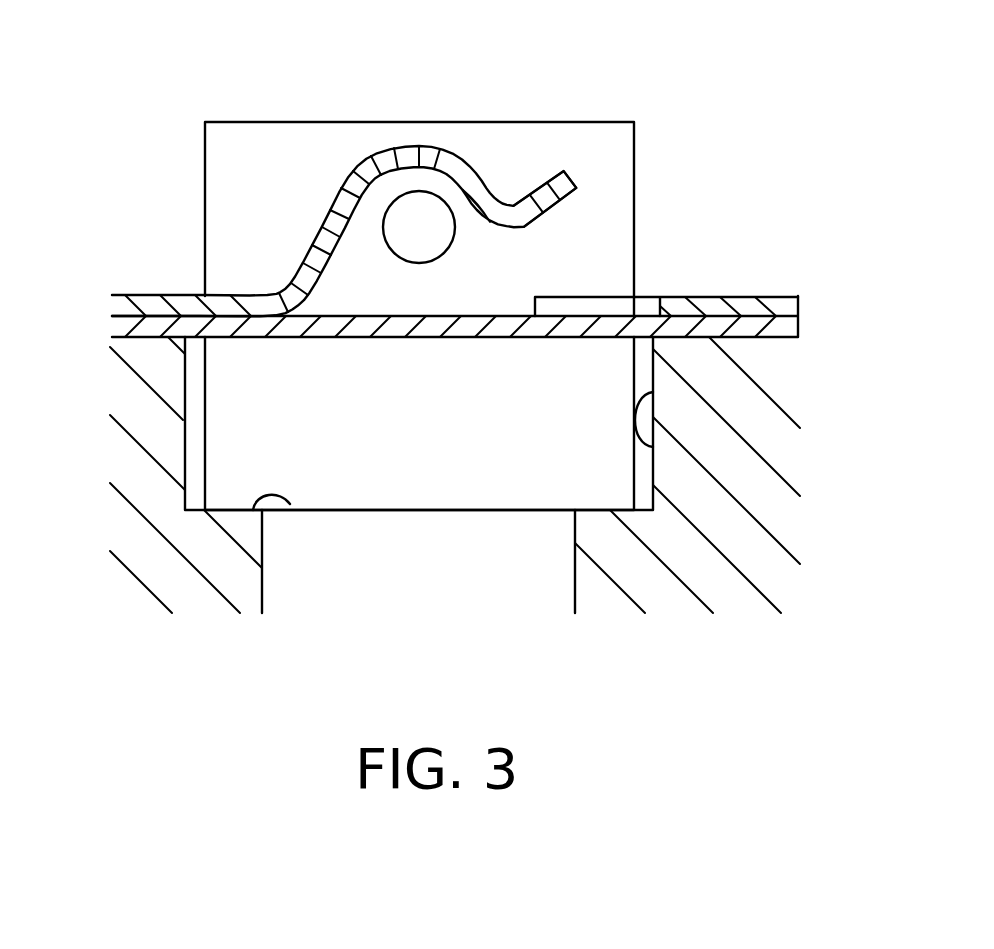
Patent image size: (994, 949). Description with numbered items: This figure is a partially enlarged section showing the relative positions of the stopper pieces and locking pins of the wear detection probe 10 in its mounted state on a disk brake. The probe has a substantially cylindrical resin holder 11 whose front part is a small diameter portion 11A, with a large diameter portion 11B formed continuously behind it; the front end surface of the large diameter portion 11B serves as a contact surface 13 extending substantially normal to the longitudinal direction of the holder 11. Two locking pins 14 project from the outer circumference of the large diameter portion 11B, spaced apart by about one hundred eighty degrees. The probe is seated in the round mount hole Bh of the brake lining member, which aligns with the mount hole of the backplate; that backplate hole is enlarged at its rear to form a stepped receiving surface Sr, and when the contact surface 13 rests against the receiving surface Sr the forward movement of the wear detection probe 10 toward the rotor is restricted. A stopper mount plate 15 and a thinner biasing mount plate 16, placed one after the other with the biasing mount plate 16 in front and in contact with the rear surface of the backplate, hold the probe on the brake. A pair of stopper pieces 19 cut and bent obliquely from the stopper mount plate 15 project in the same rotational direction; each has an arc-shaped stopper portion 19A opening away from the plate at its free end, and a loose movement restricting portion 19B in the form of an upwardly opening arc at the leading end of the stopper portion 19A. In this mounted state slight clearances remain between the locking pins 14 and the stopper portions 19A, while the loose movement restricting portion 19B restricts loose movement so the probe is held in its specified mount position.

The wear detection probe 10 is at (668, 145).
The holder 11 is at (623, 260).
The small diameter portion 11A is at (498, 570).
The large diameter portion 11B is at (590, 473).
The contact surface 13 is at (243, 510).
The locking pin 14 is at (418, 243).
The stopper mount plate 15 is at (762, 306).
The biasing mount plate 16 is at (766, 338).
The stopper piece 19 is at (326, 238).
The stopper portion 19A is at (418, 157).
The loose movement restricting portion 19B is at (548, 236).
The mount hole Bh is at (653, 447).
The receiving surface Sr is at (290, 504).